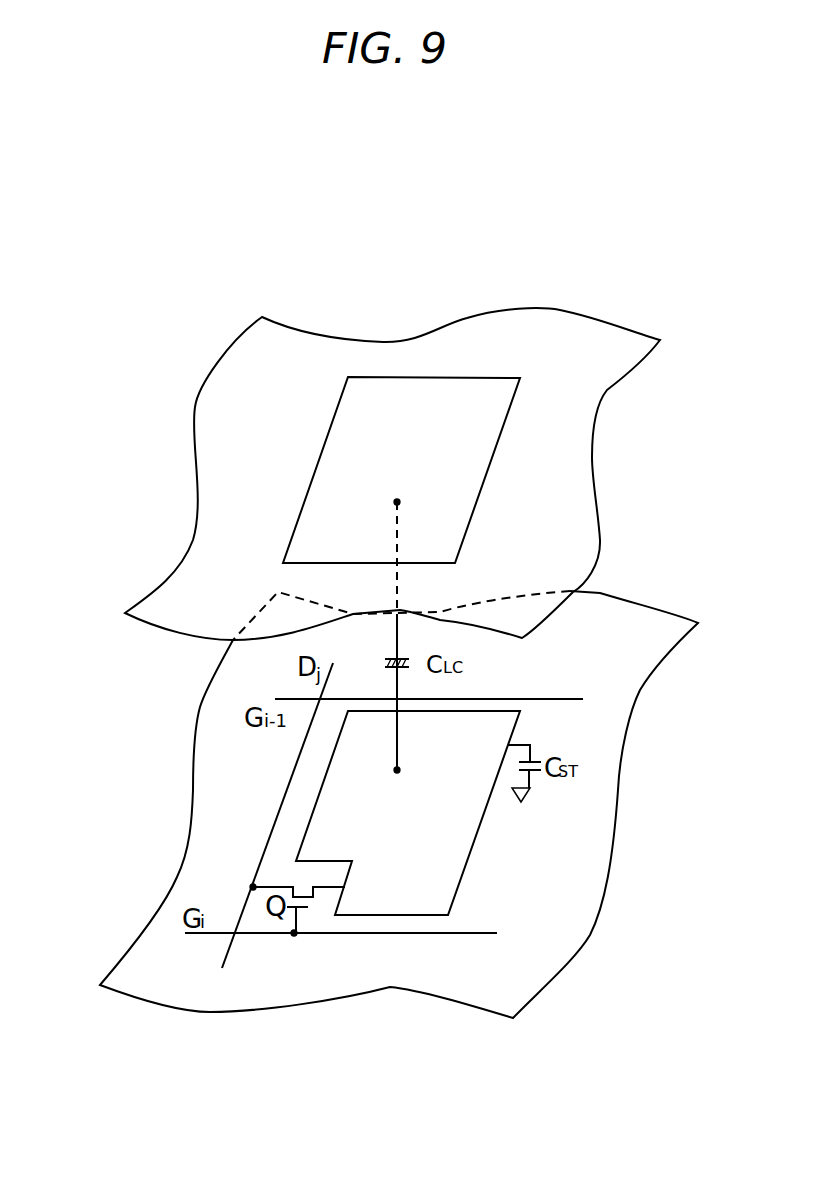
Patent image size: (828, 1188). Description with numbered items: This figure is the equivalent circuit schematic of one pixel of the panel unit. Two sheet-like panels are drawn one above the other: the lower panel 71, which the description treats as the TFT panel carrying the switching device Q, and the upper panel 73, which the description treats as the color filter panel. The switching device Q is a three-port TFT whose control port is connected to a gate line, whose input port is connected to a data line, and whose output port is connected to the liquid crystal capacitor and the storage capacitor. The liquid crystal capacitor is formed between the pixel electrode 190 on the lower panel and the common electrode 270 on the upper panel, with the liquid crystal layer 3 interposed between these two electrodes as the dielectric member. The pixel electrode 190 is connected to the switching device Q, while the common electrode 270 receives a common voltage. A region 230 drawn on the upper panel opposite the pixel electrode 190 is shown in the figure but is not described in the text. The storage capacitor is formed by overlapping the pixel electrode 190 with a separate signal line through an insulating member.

The liquid crystal layer 3 is at (122, 712).
The lower panel (thin film transistor array panel) 71 is at (622, 783).
The upper panel (common electrode panel) 73 is at (406, 474).
The pixel electrode 190 is at (468, 859).
The color filter 230 is at (470, 527).
The common electrode 270 is at (603, 500).